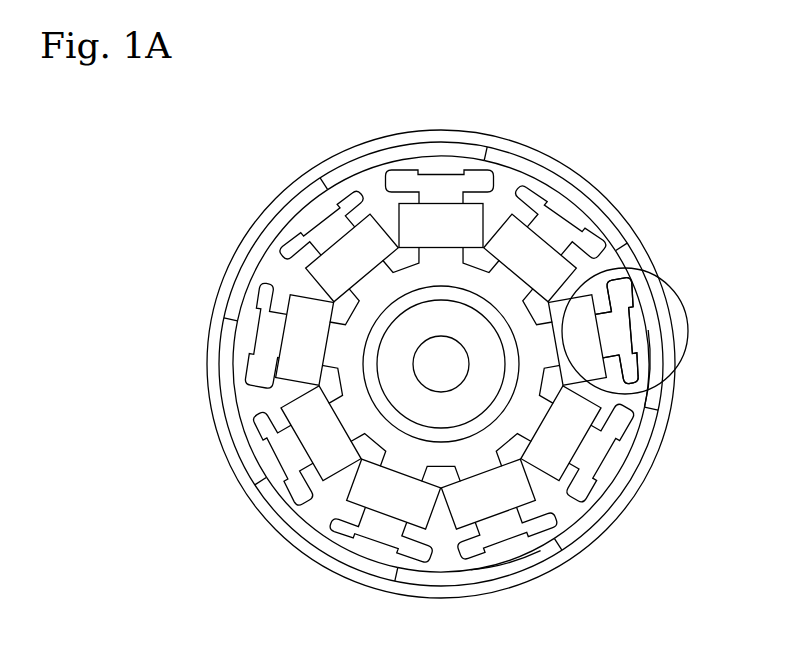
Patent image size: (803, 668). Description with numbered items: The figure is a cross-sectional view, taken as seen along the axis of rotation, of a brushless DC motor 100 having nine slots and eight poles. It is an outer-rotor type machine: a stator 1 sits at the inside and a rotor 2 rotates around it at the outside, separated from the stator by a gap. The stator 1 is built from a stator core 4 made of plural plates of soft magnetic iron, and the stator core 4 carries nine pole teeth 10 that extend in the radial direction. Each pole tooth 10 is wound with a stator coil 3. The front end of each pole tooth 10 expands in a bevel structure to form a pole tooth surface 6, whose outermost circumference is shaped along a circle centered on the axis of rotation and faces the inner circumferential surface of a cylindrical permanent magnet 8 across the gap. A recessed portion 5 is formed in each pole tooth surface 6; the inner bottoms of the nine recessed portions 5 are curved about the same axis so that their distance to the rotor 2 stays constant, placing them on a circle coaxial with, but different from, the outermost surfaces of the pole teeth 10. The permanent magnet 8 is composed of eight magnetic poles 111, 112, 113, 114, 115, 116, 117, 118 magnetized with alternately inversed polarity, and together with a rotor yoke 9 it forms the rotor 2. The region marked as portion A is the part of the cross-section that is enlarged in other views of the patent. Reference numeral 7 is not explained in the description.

The brushless DC motor 100 is at (622, 178).
The stator 1 is at (727, 204).
The rotor 2 is at (700, 452).
The stator coil 3 is at (512, 243).
The stator core 4 is at (508, 293).
The recessed portion 5 is at (636, 333).
The pole tooth surface 6 is at (650, 352).
The insulator 7 is at (520, 551).
The permanent magnet 8 is at (641, 466).
The rotor yoke 9 is at (633, 495).
The pole tooth 10 is at (670, 379).
The portion A is at (682, 373).
The magnetic pole 111 is at (364, 166).
The magnetic pole 112 is at (520, 165).
The magnetic pole 113 is at (665, 400).
The magnetic pole 114 is at (598, 515).
The magnetic pole 115 is at (460, 585).
The magnetic pole 116 is at (305, 540).
The magnetic pole 117 is at (226, 396).
The magnetic pole 118 is at (257, 254).